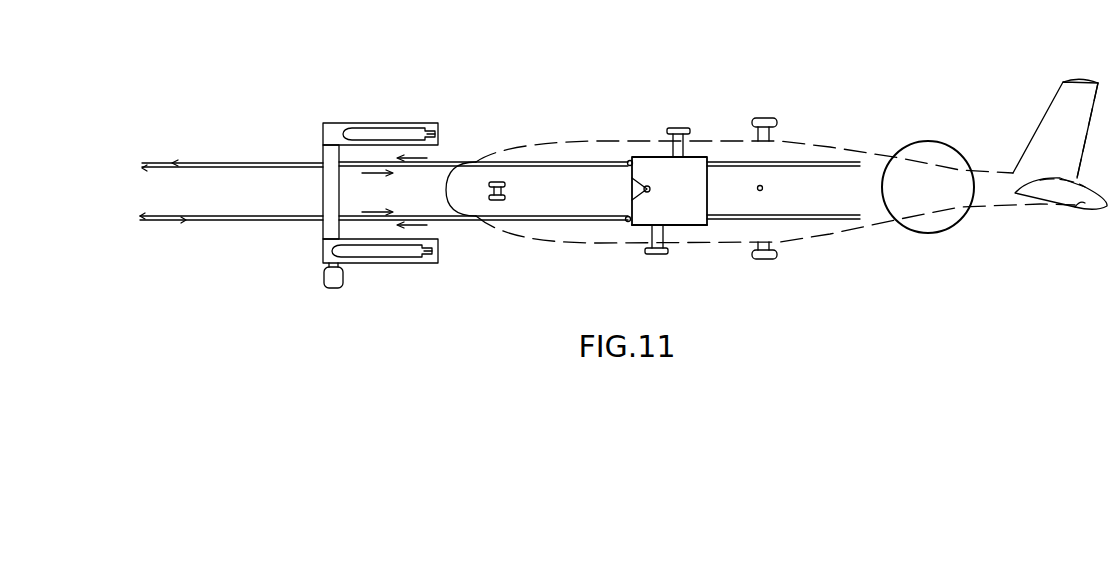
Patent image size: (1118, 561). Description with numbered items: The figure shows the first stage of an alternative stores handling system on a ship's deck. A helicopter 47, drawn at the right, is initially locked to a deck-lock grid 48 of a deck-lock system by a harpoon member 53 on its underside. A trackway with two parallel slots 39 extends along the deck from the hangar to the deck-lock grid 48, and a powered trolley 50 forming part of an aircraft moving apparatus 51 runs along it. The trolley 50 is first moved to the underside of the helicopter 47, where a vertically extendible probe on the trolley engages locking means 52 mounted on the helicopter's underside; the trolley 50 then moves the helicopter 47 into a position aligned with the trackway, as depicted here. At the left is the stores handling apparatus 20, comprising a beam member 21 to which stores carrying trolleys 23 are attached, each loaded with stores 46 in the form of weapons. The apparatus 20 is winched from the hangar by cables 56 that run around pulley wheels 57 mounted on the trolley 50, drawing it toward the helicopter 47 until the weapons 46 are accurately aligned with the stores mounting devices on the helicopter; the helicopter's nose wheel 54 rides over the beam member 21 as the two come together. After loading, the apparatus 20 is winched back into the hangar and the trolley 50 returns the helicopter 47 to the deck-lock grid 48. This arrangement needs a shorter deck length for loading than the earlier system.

The stores handling apparatus 20 is at (377, 278).
The beam member 21 is at (323, 162).
The stores carrying trolleys 23 is at (417, 125).
The parallel slots 39 is at (848, 163).
The stores 46 is at (362, 133).
The helicopter 47 is at (822, 237).
The deck-lock grid 48 is at (967, 217).
The powered trolley 50 is at (684, 204).
The aircraft moving apparatus 51 is at (694, 231).
The locking means 52 is at (649, 186).
The harpoon member 53 is at (762, 186).
The nose wheel 54 is at (497, 182).
The cables 56 is at (182, 160).
The pulley wheels 57 is at (628, 161).